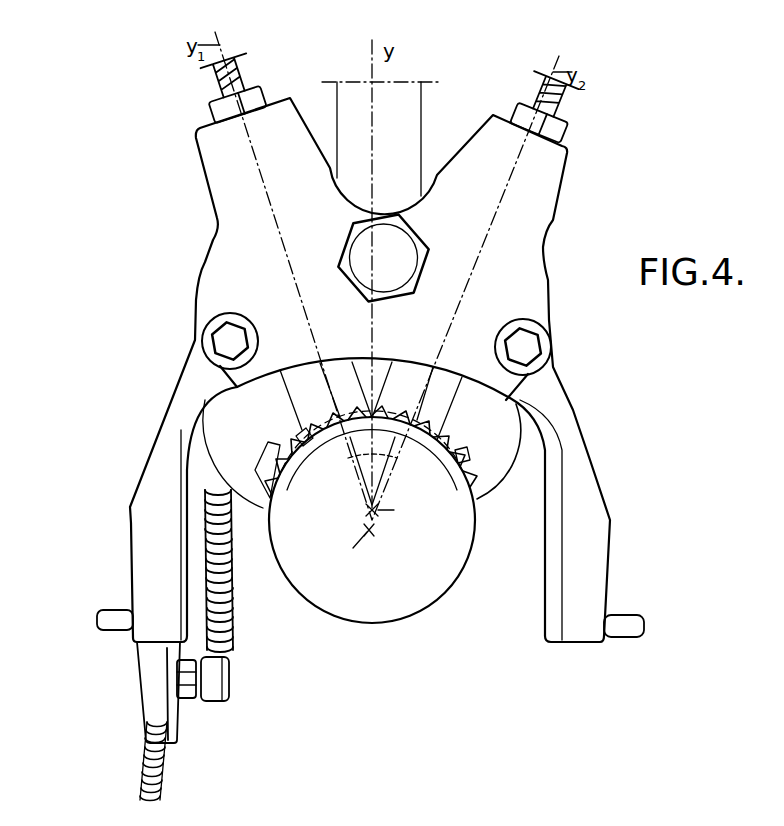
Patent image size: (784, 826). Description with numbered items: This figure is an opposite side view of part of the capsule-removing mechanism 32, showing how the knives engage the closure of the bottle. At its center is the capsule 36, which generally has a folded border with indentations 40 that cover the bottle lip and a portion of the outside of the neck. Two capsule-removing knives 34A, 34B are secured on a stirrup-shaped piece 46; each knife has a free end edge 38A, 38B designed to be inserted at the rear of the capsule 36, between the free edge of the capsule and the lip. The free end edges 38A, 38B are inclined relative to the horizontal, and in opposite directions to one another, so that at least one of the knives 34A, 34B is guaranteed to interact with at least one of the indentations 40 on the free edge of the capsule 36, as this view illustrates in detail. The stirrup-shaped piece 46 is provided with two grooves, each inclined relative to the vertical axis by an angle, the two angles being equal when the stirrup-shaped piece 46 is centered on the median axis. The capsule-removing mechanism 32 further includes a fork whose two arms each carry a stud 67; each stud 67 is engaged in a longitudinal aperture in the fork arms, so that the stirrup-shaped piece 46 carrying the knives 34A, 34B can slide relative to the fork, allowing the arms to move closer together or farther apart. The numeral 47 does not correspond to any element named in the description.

The capsule-removing mechanism 32 is at (232, 273).
The capsule-removing knife 34A is at (345, 398).
The capsule-removing knife 34B is at (433, 405).
The capsule 36 is at (352, 585).
The free end edge 38A is at (296, 438).
The free end edge 38B is at (478, 490).
The indentations 40 is at (257, 472).
The stirrup-shaped piece 46 is at (588, 526).
The arm leg 47 is at (152, 566).
The stud 67 is at (113, 616).